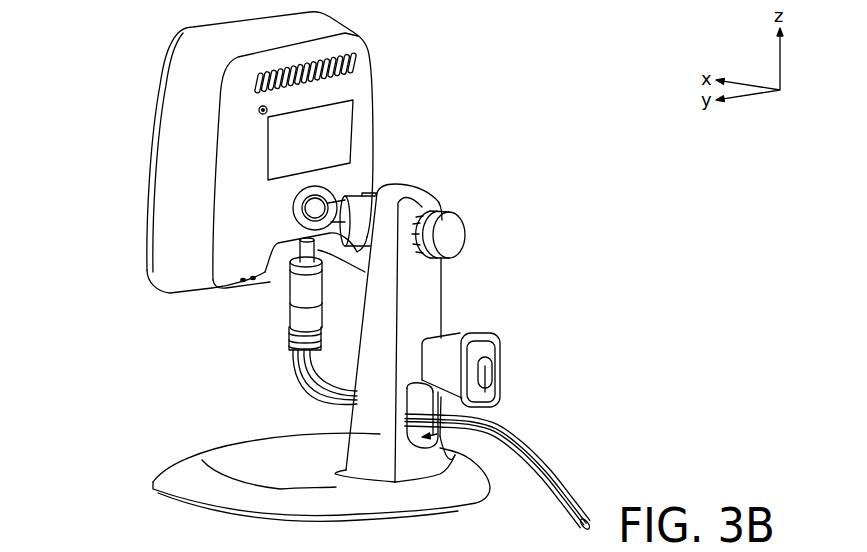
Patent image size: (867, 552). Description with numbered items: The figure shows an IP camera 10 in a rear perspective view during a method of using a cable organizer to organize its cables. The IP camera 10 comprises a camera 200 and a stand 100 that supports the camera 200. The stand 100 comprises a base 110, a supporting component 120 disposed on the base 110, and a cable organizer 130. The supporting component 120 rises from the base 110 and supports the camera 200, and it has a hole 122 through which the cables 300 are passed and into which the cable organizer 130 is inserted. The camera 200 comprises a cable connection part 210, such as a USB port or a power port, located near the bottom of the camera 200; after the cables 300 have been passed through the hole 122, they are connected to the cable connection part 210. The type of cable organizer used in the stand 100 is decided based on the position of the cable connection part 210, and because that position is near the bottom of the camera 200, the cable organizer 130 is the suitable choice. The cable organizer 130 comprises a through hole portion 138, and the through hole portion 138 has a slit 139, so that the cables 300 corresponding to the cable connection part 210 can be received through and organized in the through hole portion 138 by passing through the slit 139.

The IP camera 10 is at (308, 272).
The stand 100 is at (353, 338).
The base 110 is at (187, 480).
The supporting component 120 is at (422, 287).
The hole 122 is at (494, 468).
The cable organizer 130 is at (483, 368).
The through hole portion 138 is at (490, 372).
The slit 139 is at (492, 397).
The camera 200 is at (196, 283).
The cable connection part 210 is at (300, 250).
The cables 300 is at (527, 468).